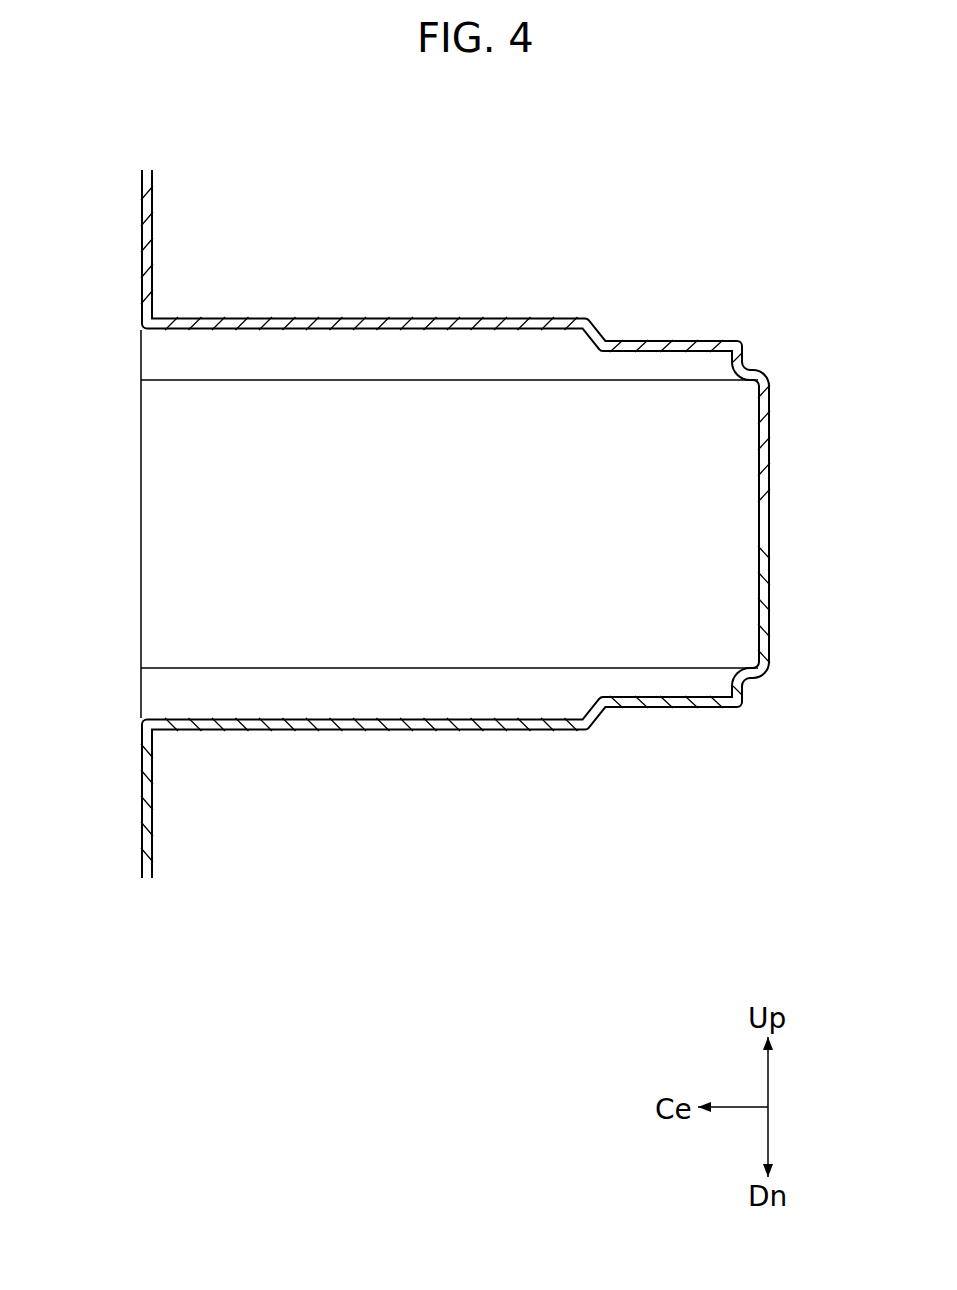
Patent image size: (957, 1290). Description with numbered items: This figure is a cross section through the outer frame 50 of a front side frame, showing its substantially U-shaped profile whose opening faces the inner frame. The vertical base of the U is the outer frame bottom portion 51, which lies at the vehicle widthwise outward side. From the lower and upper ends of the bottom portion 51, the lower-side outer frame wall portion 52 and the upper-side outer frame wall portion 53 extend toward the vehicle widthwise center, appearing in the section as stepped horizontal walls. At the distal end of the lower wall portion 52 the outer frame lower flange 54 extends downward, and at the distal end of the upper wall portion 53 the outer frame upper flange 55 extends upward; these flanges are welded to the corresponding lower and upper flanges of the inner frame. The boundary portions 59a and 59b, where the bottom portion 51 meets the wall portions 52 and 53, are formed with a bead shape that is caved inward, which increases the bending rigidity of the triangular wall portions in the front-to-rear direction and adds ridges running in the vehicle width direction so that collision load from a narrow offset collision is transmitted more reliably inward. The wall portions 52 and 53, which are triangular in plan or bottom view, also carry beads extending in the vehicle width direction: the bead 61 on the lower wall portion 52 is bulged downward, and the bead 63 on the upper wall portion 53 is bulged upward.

The outer frame 50 is at (621, 201).
The outer frame bottom portion 51 is at (762, 538).
The lower-side outer frame wall portion 52 is at (651, 700).
The upper-side outer frame wall portion 53 is at (651, 350).
The outer frame lower flange 54 is at (138, 805).
The outer frame upper flange 55 is at (140, 267).
The boundary portion 59a is at (746, 690).
The boundary portion 59b is at (748, 367).
The bead 61 is at (515, 732).
The bead 63 is at (512, 316).